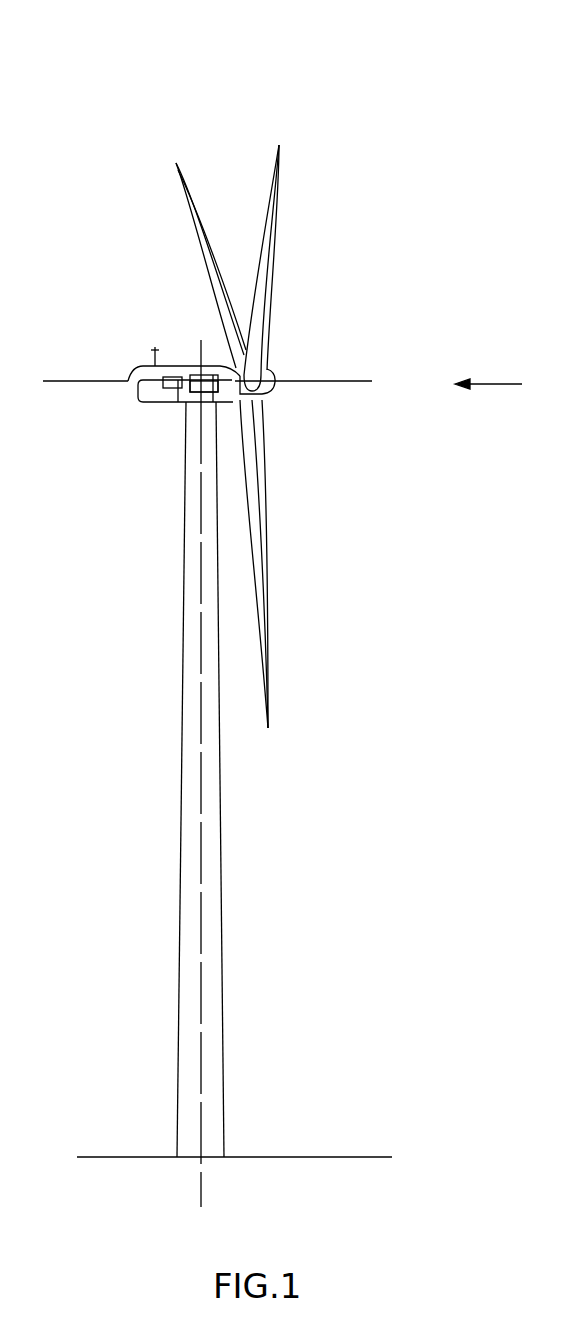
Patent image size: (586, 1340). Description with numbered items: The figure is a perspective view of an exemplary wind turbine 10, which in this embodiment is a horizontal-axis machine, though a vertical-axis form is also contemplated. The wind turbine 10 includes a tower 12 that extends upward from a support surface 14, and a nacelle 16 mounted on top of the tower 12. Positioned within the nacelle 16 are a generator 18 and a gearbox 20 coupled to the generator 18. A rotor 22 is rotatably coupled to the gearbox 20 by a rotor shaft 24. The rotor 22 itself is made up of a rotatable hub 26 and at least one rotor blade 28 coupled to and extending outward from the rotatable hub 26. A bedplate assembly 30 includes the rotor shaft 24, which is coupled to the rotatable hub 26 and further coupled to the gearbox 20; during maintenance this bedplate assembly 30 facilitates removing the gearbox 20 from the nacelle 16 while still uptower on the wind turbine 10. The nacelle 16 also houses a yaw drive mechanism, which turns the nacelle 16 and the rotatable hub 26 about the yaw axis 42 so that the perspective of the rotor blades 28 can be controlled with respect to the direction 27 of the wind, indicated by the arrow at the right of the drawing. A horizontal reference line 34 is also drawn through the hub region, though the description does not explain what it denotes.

The wind turbine 10 is at (397, 98).
The tower 12 is at (180, 895).
The support surface 14 is at (128, 1155).
The nacelle 16 is at (168, 403).
The generator 18 is at (163, 380).
The gearbox 20 is at (194, 376).
The rotor 22 is at (272, 362).
The rotor shaft 24 is at (199, 373).
The rotatable hub 26 is at (272, 372).
The direction of the wind 27 is at (500, 384).
The rotor blade 28 is at (193, 223).
The bedplate assembly 30 is at (170, 412).
The rotor axis 34 is at (340, 382).
The yaw axis 42 is at (202, 820).